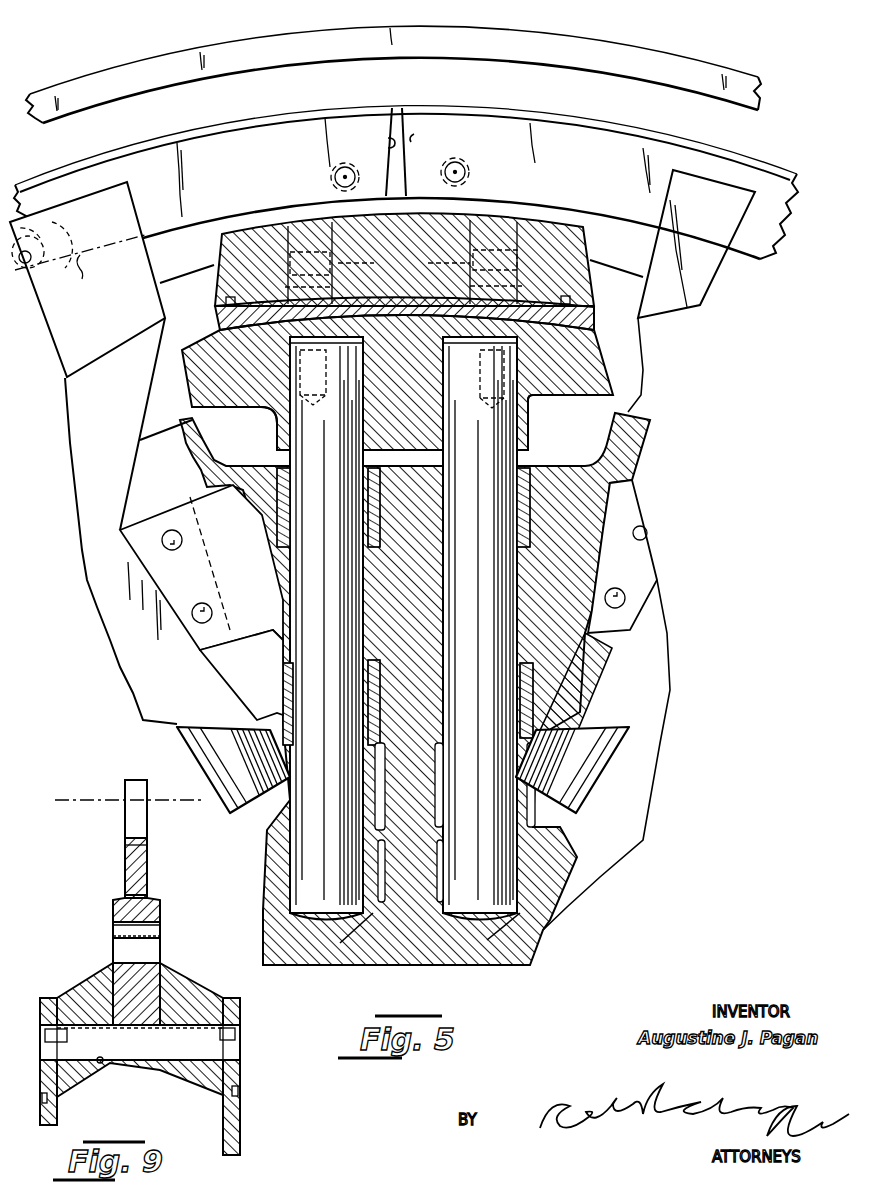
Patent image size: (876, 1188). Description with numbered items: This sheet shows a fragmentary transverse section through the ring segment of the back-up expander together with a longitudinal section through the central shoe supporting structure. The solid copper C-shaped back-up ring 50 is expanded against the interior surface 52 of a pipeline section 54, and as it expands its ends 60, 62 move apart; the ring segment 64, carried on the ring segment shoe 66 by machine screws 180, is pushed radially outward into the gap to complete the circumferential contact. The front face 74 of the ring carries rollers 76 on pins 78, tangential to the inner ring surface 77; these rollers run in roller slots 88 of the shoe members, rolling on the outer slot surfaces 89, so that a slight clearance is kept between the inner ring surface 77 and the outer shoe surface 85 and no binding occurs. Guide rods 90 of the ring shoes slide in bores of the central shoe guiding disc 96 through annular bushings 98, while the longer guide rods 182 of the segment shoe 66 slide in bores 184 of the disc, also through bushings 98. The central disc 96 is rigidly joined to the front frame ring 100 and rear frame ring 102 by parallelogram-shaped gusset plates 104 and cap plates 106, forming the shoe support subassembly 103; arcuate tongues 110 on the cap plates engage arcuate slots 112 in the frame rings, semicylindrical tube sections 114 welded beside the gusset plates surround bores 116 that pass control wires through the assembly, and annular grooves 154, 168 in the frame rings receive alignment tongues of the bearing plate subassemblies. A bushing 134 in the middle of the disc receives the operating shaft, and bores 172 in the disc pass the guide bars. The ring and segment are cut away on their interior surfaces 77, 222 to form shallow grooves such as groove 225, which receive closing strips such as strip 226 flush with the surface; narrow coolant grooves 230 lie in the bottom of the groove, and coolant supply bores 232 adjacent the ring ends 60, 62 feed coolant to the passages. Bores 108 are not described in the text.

In FIG. 5, the back-up ring 50 is at (320, 112).
In FIG. 5, the interior surface 52 is at (262, 76).
In FIG. 5, the pipeline section 54 is at (180, 52).
In FIG. 5, the ring end 60 is at (386, 142).
In FIG. 5, the ring end 62 is at (422, 138).
In FIG. 5, the ring segment 64 is at (543, 226).
In FIG. 5, the ring segment shoe 66 is at (572, 394).
In FIG. 5, the front face 74 is at (230, 191).
In FIG. 5, the roller 76 is at (87, 279).
In FIG. 5, the inner ring surface 77 is at (52, 305).
In FIG. 5, the pin 78 is at (22, 265).
In FIG. 5, the outer shoe surface 85 is at (85, 255).
In FIG. 5, the roller slot 88 is at (68, 238).
In FIG. 5, the outer slot surface 89 is at (36, 230).
In FIG. 5, the guide rod 90 is at (270, 786).
In FIG. 5, the central shoe guiding disc 96 is at (166, 434).
In FIG. 9, the central shoe guiding disc 96 is at (165, 968).
In FIG. 5, the annular bushing 98 is at (378, 490).
In FIG. 9, the front frame ring 100 is at (40, 998).
In FIG. 5, the rear frame ring 102 is at (402, 204).
In FIG. 9, the rear frame ring 102 is at (240, 1000).
In FIG. 9, the shoe support subassembly 103 is at (100, 1094).
In FIG. 5, the gusset plate 104 is at (249, 654).
In FIG. 9, the gusset plate 104 is at (110, 962).
In FIG. 5, the cap plate 106 is at (638, 490).
In FIG. 9, the cap plate 106 is at (62, 998).
In FIG. 5, the hole 108 is at (638, 545).
In FIG. 9, the arcuate tongue 110 is at (218, 1033).
In FIG. 9, the arcuate slot 112 is at (99, 1060).
In FIG. 9, the tube section 114 is at (180, 1078).
In FIG. 9, the bore 116 is at (94, 1088).
In FIG. 9, the bushing 134 is at (147, 844).
In FIG. 9, the annular groove 154 is at (42, 1110).
In FIG. 9, the annular groove 168 is at (240, 1092).
In FIG. 9, the bore 172 is at (160, 925).
In FIG. 5, the machine screw 180 is at (403, 268).
In FIG. 5, the guide rod 182 is at (448, 848).
In FIG. 5, the bore 184 is at (378, 598).
In FIG. 5, the interior surface 222 is at (548, 385).
In FIG. 5, the shallow groove 225 is at (404, 322).
In FIG. 5, the coolant passage closing strip 226 is at (458, 338).
In FIG. 5, the coolant groove 230 is at (258, 288).
In FIG. 5, the coolant supply bore 232 is at (329, 171).